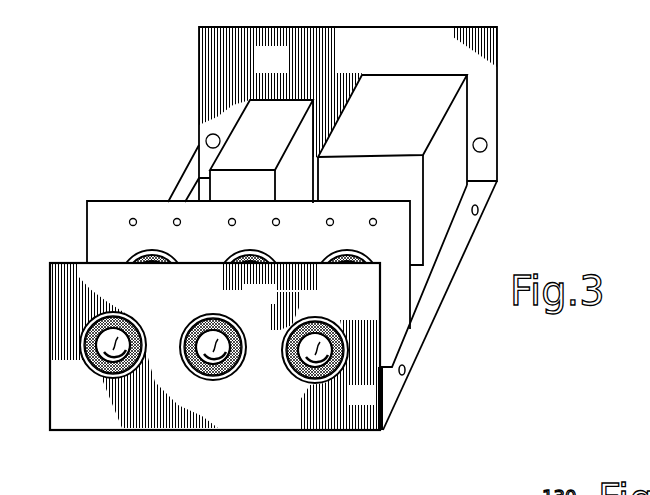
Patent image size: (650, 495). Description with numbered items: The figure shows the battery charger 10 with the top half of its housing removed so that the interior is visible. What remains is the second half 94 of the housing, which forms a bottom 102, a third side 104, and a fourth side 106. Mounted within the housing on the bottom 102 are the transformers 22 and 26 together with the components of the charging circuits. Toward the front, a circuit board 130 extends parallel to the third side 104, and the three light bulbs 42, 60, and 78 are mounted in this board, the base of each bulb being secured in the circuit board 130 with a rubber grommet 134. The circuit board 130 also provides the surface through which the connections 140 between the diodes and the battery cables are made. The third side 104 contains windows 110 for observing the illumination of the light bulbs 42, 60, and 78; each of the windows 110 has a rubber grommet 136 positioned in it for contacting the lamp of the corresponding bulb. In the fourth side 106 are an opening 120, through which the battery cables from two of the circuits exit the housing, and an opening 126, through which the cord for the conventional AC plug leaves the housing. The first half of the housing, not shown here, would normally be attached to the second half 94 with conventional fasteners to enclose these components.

The battery charger 10 is at (121, 63).
The transformer 22 is at (480, 190).
The transformer 26 is at (286, 106).
The light bulb 42 is at (326, 376).
The light bulb 60 is at (210, 338).
The light bulb 78 is at (117, 342).
The second half 94 is at (413, 343).
The bottom 102 is at (420, 281).
The third side 104 is at (324, 418).
The fourth side 106 is at (485, 78).
The window 110 is at (224, 368).
The opening 120 is at (206, 143).
The opening 126 is at (488, 144).
The circuit board 130 is at (97, 233).
The rubber grommet 134 is at (158, 248).
The rubber grommet 136 is at (81, 347).
The connections 140 is at (330, 217).